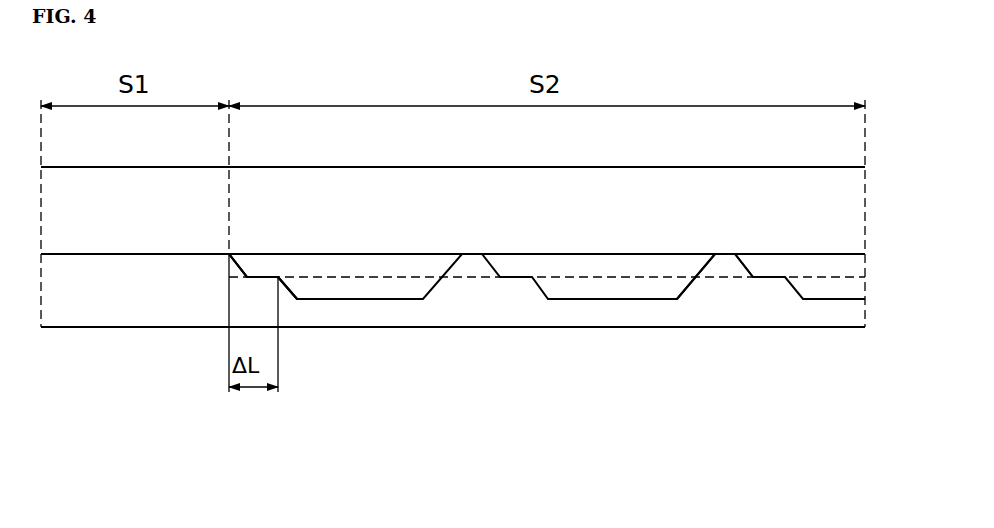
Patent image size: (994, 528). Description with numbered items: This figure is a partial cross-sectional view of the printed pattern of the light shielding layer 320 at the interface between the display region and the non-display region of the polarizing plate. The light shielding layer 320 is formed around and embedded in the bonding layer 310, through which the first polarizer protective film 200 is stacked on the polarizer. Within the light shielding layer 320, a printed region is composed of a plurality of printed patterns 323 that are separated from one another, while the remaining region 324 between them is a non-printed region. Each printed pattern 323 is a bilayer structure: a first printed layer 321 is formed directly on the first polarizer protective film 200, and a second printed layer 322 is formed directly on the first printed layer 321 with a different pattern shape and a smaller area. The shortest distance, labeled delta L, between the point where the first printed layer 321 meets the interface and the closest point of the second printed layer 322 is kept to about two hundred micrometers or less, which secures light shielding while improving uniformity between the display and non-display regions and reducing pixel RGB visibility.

The first polarizer protective film 200 is at (852, 206).
The bonding layer 310 is at (85, 305).
The light shielding layer 320 is at (872, 254).
The first printed layer 321 is at (238, 268).
The second printed layer 322 is at (377, 299).
The printed patterns 323 is at (403, 440).
The remaining region 324 is at (723, 256).